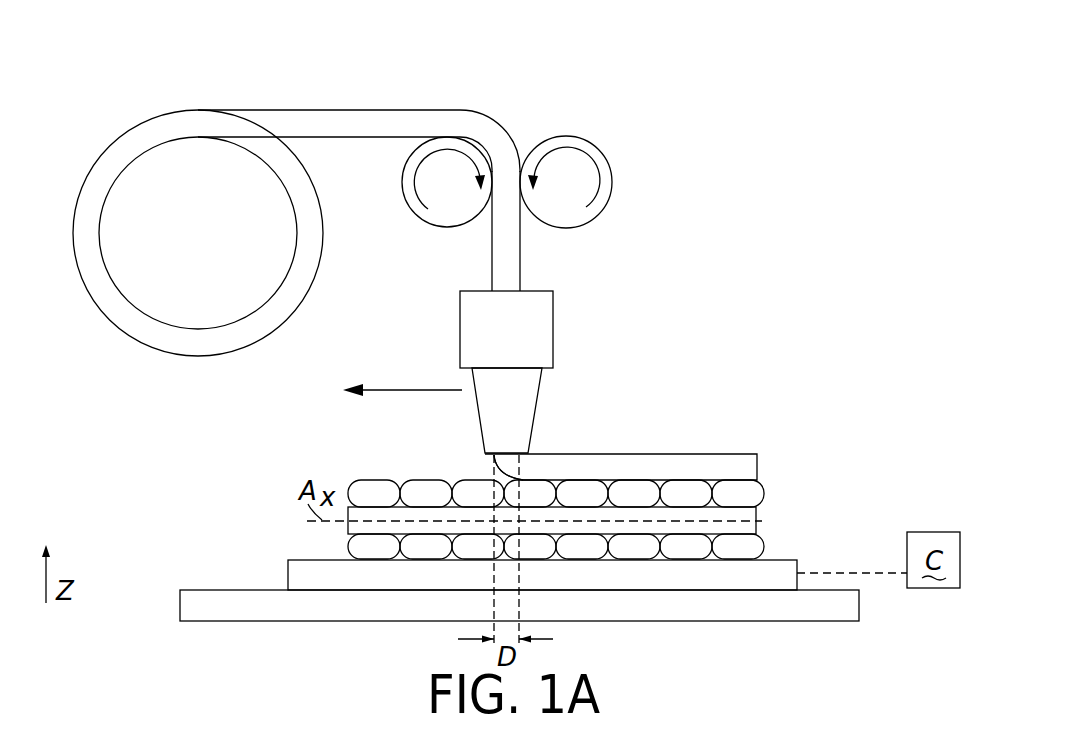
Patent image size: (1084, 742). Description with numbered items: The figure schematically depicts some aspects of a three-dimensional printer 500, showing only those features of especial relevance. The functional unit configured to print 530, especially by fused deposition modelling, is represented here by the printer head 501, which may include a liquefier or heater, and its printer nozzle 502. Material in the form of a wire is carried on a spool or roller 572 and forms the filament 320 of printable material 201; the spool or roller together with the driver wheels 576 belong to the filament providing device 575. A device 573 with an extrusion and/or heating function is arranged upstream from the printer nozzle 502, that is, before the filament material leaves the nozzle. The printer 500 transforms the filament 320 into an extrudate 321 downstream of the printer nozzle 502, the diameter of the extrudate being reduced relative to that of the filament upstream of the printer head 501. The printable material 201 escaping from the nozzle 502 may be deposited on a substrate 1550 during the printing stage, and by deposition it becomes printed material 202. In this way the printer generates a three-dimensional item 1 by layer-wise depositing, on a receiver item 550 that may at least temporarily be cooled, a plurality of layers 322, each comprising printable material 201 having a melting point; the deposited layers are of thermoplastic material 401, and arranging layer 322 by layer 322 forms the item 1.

The 3D item 1 is at (820, 485).
The 3D printable material 201 is at (585, 444).
The 3D printed material 202 is at (728, 460).
The filament 320 is at (473, 255).
The extrudate 321 is at (510, 436).
The layer 322 is at (752, 467).
The thermoplastic material 401 is at (693, 467).
The 3D printer 500 is at (790, 280).
The printer head 501 is at (540, 336).
The printer nozzle 502 is at (478, 437).
The functional unit configured to 3D print 530 is at (178, 403).
The receiver item 550 is at (266, 577).
The spool or roller 572 is at (133, 108).
The extrusion and/or heating device 573 is at (580, 267).
The filament providing device 575 is at (622, 148).
The driver wheels 576 is at (505, 108).
The substrate 1550 is at (276, 514).